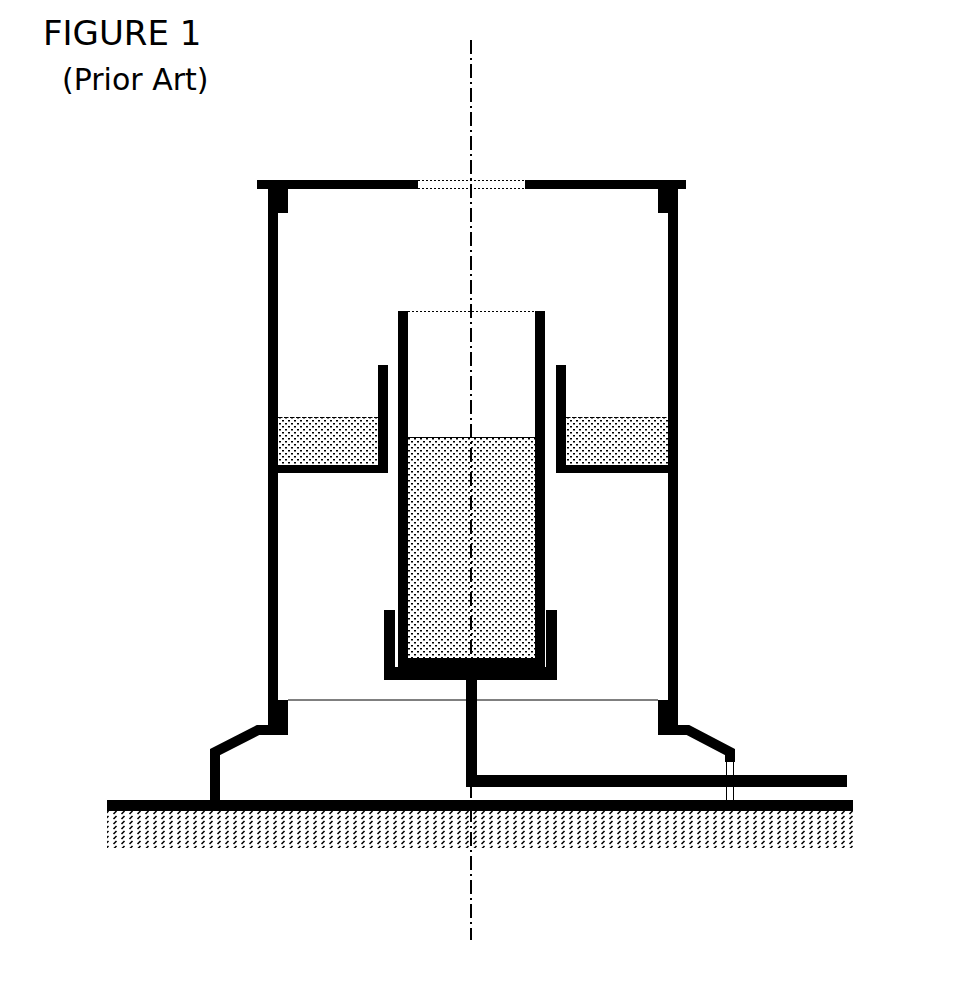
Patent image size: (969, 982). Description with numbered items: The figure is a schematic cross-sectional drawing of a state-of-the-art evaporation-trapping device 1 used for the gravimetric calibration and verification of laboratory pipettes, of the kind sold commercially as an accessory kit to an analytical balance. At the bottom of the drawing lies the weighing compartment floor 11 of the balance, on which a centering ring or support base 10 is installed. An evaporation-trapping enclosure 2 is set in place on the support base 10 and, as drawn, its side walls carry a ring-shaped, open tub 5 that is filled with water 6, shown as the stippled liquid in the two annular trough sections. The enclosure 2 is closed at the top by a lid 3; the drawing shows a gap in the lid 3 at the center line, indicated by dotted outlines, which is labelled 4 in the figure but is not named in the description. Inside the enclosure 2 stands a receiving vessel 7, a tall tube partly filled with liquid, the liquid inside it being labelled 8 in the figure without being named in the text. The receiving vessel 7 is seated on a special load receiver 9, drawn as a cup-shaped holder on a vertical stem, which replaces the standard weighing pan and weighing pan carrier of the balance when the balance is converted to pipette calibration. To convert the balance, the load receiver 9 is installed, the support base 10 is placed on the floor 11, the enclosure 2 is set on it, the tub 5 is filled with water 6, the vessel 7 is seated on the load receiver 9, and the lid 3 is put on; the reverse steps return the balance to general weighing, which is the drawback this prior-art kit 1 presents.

The evaporation-trapping device 1 is at (694, 124).
The evaporation-trapping enclosure 2 is at (678, 281).
The lid 3 is at (558, 180).
The outlet opening 4 is at (486, 180).
The ring-shaped, open tub 5 is at (624, 400).
The water 6 is at (624, 448).
The receiving vessel 7 is at (545, 544).
The liquid in inner tube 8 is at (503, 614).
The load receiver 9 is at (480, 722).
The support base 10 is at (233, 742).
The weighing compartment floor 11 is at (168, 800).